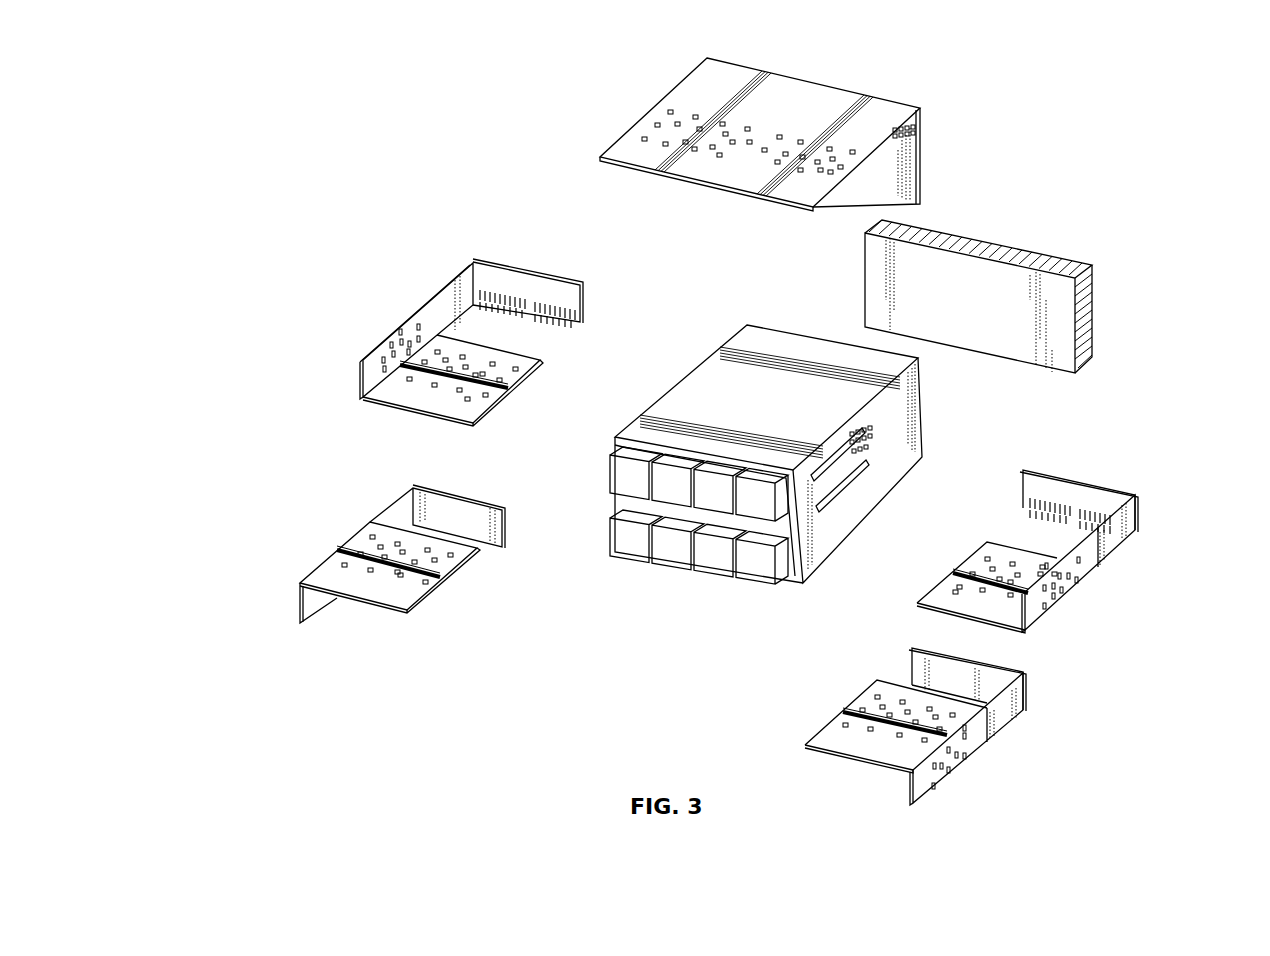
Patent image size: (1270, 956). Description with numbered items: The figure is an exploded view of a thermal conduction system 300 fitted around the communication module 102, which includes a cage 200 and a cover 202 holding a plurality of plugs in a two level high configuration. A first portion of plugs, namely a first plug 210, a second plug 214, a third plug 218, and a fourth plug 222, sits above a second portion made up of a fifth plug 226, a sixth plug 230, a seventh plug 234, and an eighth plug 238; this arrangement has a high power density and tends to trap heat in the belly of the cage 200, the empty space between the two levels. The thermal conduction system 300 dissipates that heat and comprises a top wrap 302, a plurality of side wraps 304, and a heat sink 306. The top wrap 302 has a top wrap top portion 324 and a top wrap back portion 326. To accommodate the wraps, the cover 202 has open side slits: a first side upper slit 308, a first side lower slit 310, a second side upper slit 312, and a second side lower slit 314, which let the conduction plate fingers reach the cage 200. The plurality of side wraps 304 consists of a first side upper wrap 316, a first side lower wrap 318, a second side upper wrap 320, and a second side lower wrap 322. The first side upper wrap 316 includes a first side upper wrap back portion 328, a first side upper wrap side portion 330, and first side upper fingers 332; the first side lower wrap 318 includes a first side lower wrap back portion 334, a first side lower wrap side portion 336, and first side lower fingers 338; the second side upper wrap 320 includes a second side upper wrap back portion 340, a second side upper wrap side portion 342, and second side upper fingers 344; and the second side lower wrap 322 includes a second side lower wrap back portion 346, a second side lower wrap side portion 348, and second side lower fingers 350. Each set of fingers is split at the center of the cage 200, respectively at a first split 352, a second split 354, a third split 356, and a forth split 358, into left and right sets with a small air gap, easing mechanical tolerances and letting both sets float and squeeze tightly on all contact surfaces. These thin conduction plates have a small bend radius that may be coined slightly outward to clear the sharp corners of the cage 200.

The communication module 102 is at (791, 323).
The cage 200 is at (783, 537).
The cover 202 is at (813, 357).
The first plug 210 is at (620, 478).
The second plug 214 is at (662, 488).
The third plug 218 is at (713, 495).
The fourth plug 222 is at (763, 502).
The fifth plug 226 is at (620, 536).
The sixth plug 230 is at (668, 550).
The seventh plug 234 is at (717, 557).
The eighth plug 238 is at (760, 563).
The thermal conduction system 300 is at (254, 109).
The top wrap 302 is at (637, 96).
The plurality of side wraps 304 is at (296, 471).
The heat sink 306 is at (986, 318).
The first side upper slit 308 is at (768, 437).
The first side lower slit 310 is at (671, 377).
The second side upper slit 312 is at (838, 445).
The second side lower slit 314 is at (843, 487).
The first side upper wrap 316 is at (424, 274).
The first side lower wrap 318 is at (386, 636).
The second side upper wrap 320 is at (1099, 477).
The second side lower wrap 322 is at (856, 789).
The top wrap top portion 324 is at (815, 100).
The top wrap back portion 326 is at (905, 176).
The first side upper wrap back portion 328 is at (527, 273).
The first side upper wrap side portion 330 is at (418, 307).
The first side upper fingers 332 is at (421, 426).
The first side lower wrap back portion 334 is at (465, 503).
The first side lower wrap side portion 336 is at (312, 612).
The first side lower fingers 338 is at (453, 600).
The second side upper wrap back portion 340 is at (1023, 485).
The second side upper wrap side portion 342 is at (1100, 545).
The second side upper fingers 344 is at (959, 546).
The second side lower wrap back portion 346 is at (982, 662).
The second side lower wrap side portion 348 is at (985, 728).
The second side lower fingers 350 is at (819, 703).
The first split 352 is at (450, 378).
The second split 354 is at (373, 553).
The third split 356 is at (995, 587).
The forth split 358 is at (878, 712).